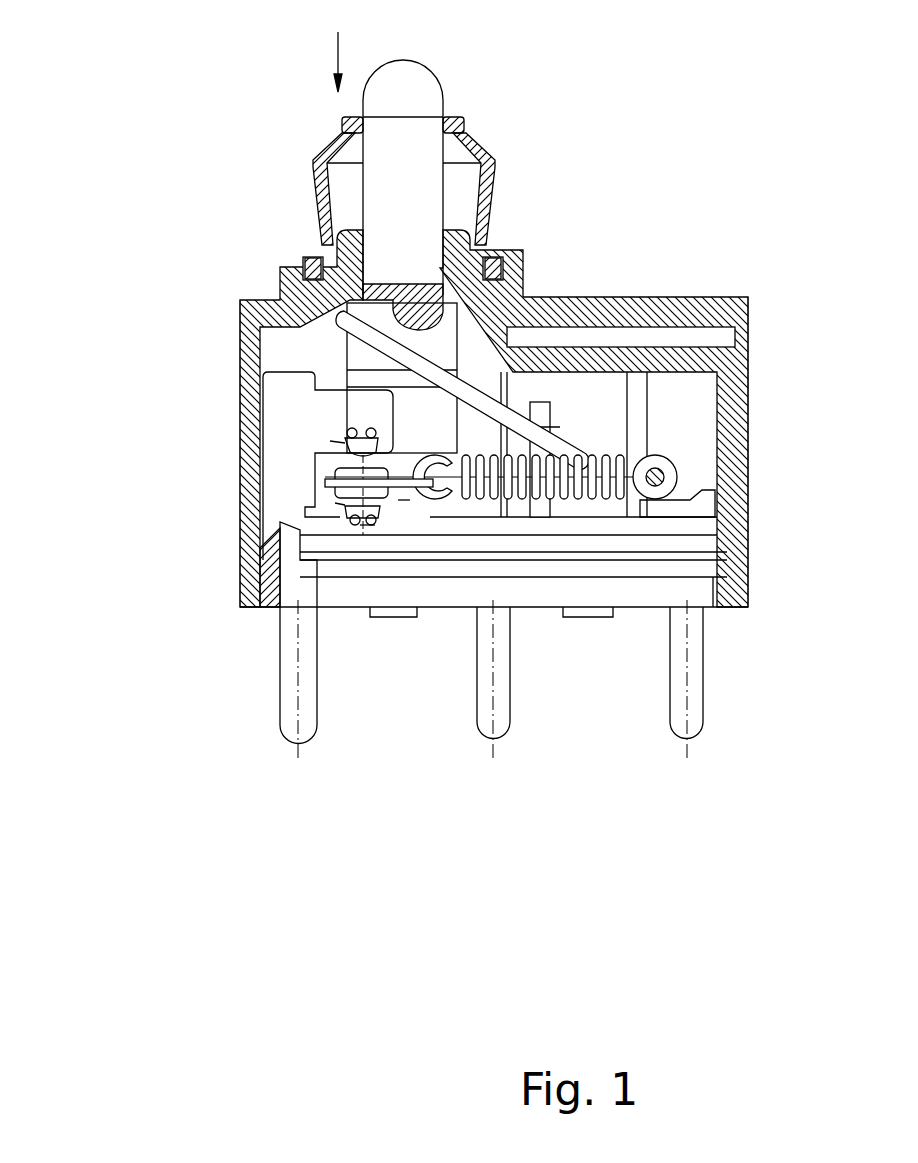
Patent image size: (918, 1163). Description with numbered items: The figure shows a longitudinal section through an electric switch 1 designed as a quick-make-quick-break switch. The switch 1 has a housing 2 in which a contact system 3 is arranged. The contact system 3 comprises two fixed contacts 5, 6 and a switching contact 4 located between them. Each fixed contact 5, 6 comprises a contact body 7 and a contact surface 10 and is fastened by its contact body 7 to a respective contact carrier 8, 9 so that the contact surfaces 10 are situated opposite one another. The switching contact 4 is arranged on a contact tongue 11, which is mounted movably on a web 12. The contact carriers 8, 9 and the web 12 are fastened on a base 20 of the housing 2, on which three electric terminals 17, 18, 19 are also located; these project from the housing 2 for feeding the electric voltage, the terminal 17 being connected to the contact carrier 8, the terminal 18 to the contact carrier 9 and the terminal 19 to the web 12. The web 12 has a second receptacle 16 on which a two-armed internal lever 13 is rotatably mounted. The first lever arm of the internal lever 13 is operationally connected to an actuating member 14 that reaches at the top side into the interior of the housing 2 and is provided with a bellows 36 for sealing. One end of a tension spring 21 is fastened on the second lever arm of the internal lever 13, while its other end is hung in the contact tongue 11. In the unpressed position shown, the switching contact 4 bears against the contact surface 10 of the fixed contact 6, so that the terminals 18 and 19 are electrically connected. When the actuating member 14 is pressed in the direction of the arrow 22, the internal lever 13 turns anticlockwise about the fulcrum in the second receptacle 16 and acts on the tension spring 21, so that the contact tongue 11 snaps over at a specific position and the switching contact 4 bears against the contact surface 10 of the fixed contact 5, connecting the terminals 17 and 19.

The electric switch 1 is at (636, 272).
The housing 2 is at (247, 384).
The contact system 3 is at (420, 525).
The switching contact 4 is at (333, 485).
The fixed contact 5 is at (330, 442).
The fixed contact 6 is at (340, 504).
The contact body 7 is at (348, 430).
The contact carrier 8 is at (334, 401).
The contact carrier 9 is at (375, 525).
The contact surface 10 is at (345, 508).
The contact tongue 11 is at (430, 607).
The web 12 is at (540, 427).
The internal lever 13 is at (470, 380).
The actuating member 14 is at (385, 155).
The second receptacle 16 is at (590, 412).
The electric terminal 17 is at (288, 712).
The electric terminal 18 is at (490, 712).
The electric terminal 19 is at (692, 705).
The base 20 is at (620, 570).
The tension spring 21 is at (545, 450).
The arrow 22 is at (338, 32).
The bellows 36 is at (318, 207).